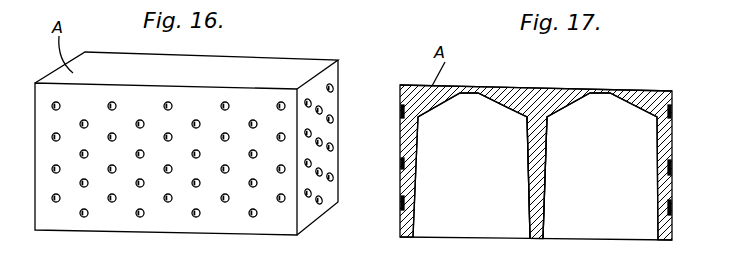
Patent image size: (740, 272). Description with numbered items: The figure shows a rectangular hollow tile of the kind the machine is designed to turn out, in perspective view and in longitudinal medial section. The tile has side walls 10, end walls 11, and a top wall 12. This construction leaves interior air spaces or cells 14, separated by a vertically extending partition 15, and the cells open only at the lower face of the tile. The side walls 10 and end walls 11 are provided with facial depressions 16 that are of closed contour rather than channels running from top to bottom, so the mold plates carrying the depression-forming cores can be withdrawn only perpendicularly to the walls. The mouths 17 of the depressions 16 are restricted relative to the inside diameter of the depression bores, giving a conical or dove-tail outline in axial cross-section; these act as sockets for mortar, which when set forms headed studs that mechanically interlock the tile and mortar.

In FIG. 16, the side wall 10 is at (229, 220).
In FIG. 17, the side wall 10 is at (441, 222).
In FIG. 16, the end wall 11 is at (337, 101).
In FIG. 17, the end wall 11 is at (402, 218).
In FIG. 16, the top wall 12 is at (255, 71).
In FIG. 17, the top wall 12 is at (517, 90).
In FIG. 17, the interior air space or cell 14 is at (535, 166).
In FIG. 17, the partition 15 is at (535, 240).
In FIG. 16, the facial depression 16 is at (52, 198).
In FIG. 17, the facial depression 16 is at (402, 144).
In FIG. 17, the mouth 17 is at (402, 110).